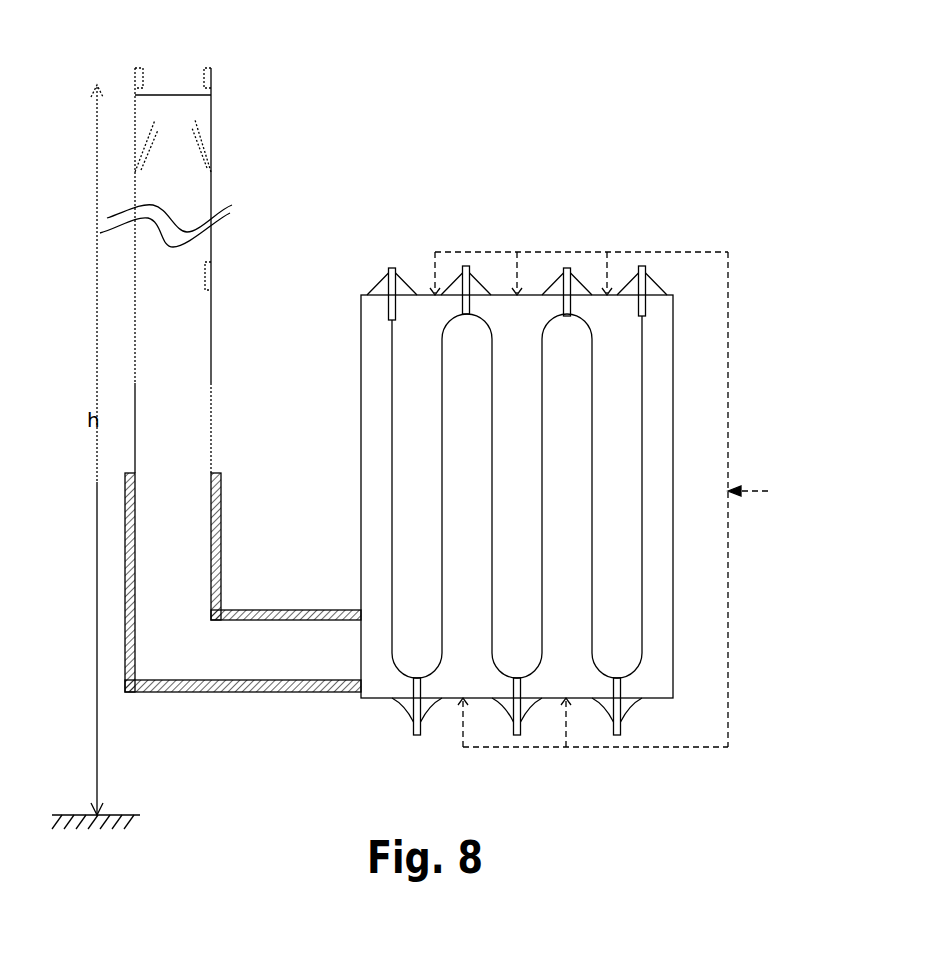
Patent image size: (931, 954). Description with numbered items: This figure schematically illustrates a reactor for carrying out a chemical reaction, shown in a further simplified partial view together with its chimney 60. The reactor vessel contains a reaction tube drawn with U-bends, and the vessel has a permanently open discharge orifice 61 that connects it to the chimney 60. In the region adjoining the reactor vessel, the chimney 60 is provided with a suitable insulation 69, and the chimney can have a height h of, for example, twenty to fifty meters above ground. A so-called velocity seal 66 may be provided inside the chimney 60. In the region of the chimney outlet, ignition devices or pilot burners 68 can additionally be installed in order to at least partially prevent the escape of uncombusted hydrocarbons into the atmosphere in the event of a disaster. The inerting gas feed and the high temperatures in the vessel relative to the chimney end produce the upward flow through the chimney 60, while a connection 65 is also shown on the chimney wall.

The chimney 60 is at (203, 722).
The discharge orifice 61 is at (358, 647).
The liquid connection 65 is at (212, 278).
The velocity seal 66 is at (212, 157).
The pilot burners 68 is at (135, 78).
The insulation 69 is at (175, 697).